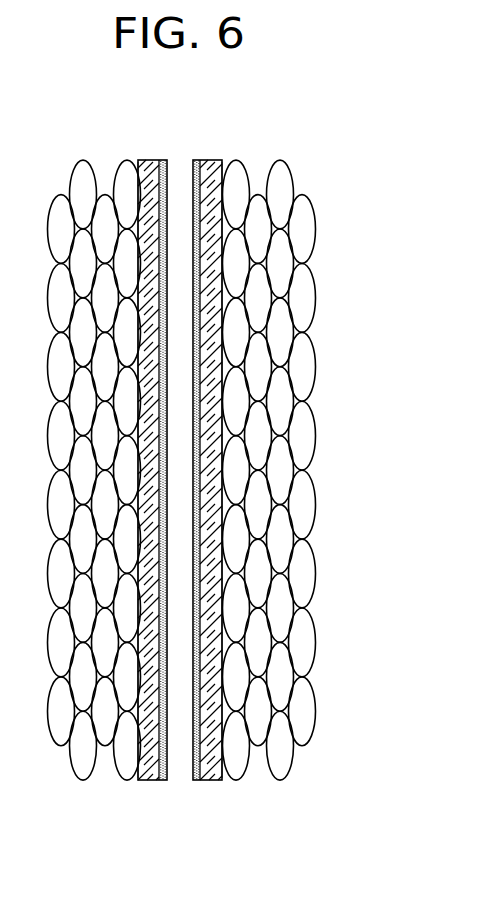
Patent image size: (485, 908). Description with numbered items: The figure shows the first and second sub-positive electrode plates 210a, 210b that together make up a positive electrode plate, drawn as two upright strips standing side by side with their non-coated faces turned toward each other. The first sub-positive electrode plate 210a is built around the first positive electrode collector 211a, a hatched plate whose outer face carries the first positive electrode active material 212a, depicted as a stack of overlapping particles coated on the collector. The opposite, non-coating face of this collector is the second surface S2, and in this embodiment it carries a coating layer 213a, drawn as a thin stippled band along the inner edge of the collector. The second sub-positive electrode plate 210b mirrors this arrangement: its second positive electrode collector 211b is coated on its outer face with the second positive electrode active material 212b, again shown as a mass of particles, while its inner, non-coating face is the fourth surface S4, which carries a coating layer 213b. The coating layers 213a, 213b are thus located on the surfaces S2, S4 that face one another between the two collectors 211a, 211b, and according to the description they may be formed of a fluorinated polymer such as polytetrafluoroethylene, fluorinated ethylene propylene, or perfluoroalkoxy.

The first sub-positive electrode plate 210a is at (112, 488).
The first positive electrode collector 211a is at (138, 472).
The first positive electrode active material 212a is at (81, 765).
The coating layer 213a is at (163, 160).
The second surface S2 is at (157, 174).
The second sub-positive electrode plate 210b is at (250, 488).
The second positive electrode collector 211b is at (223, 472).
The second positive electrode active material 212b is at (207, 847).
The coating layer 213b is at (197, 160).
The fourth surface S4 is at (222, 162).